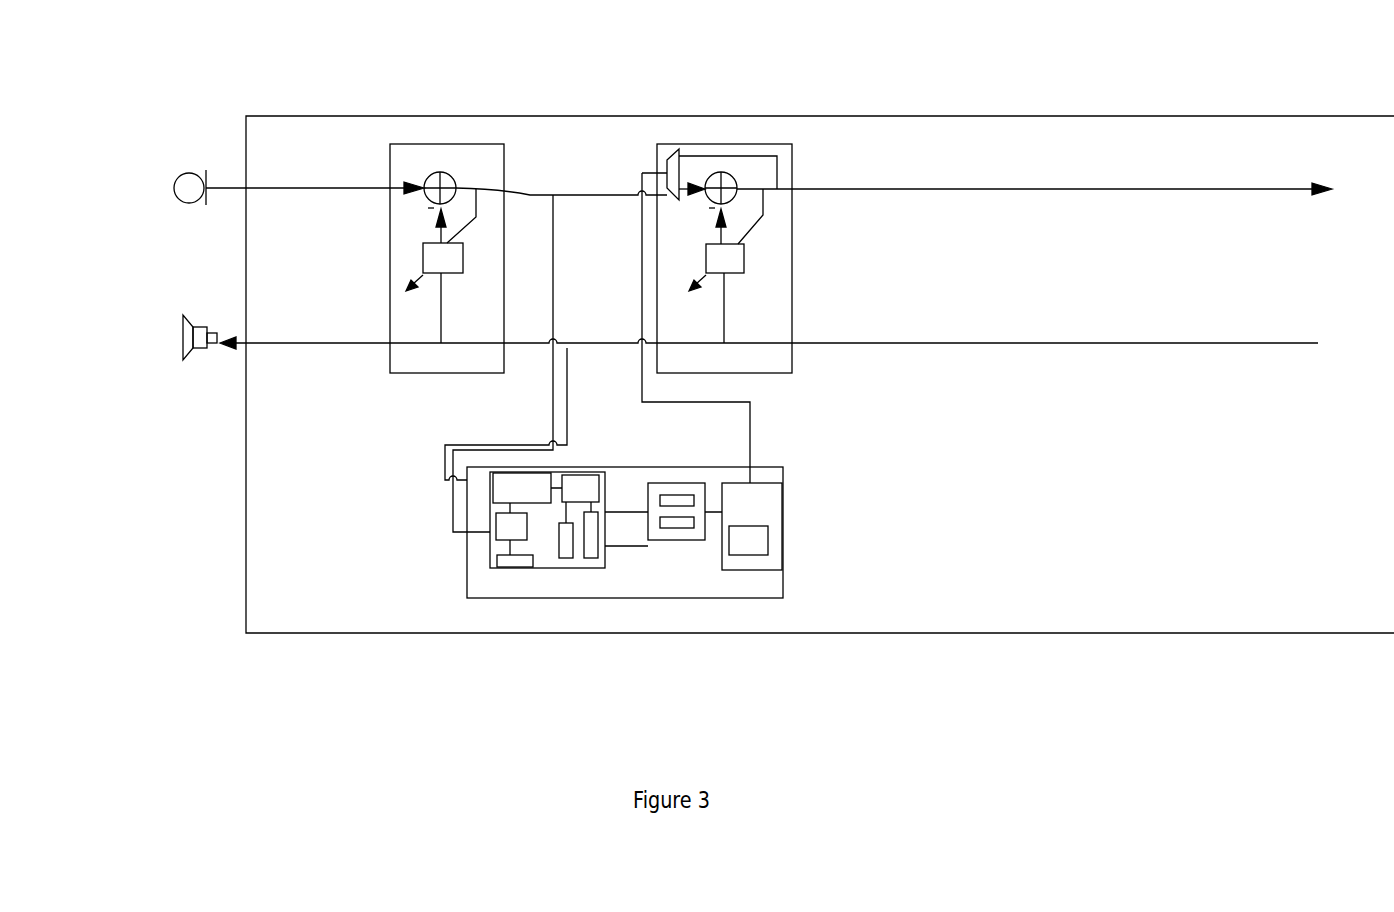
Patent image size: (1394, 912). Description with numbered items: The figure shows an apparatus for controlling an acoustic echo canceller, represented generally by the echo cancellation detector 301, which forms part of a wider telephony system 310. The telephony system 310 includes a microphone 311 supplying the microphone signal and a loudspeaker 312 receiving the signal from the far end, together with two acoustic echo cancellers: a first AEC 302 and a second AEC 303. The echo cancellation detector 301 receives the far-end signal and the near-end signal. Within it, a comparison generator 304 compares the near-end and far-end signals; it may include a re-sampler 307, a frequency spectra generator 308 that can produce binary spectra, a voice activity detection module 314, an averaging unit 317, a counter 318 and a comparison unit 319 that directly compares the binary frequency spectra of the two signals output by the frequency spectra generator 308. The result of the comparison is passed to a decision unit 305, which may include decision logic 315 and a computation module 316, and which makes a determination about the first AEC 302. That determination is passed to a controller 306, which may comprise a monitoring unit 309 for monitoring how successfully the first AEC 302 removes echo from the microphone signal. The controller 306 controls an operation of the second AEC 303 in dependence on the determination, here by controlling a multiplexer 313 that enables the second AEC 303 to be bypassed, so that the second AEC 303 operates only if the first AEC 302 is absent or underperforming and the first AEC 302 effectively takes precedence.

The echo cancellation detector 301 is at (727, 598).
The first AEC 302 is at (451, 143).
The second AEC 303 is at (793, 160).
The comparison generator 304 is at (548, 568).
The decision unit 305 is at (672, 483).
The controller 306 is at (777, 482).
The re-sampler 307 is at (493, 488).
The frequency spectra generator 308 is at (496, 535).
The monitoring unit 309 is at (768, 540).
The telephony system 310 is at (983, 116).
The microphone 311 is at (142, 186).
The loudspeaker 312 is at (183, 335).
The multiplexer 313 is at (670, 157).
The voice activity detection module 314 is at (513, 568).
The decision logic 315 is at (680, 495).
The computation module 316 is at (675, 528).
The averaging unit 317 is at (568, 558).
The counter 318 is at (597, 558).
The comparison unit 319 is at (578, 490).